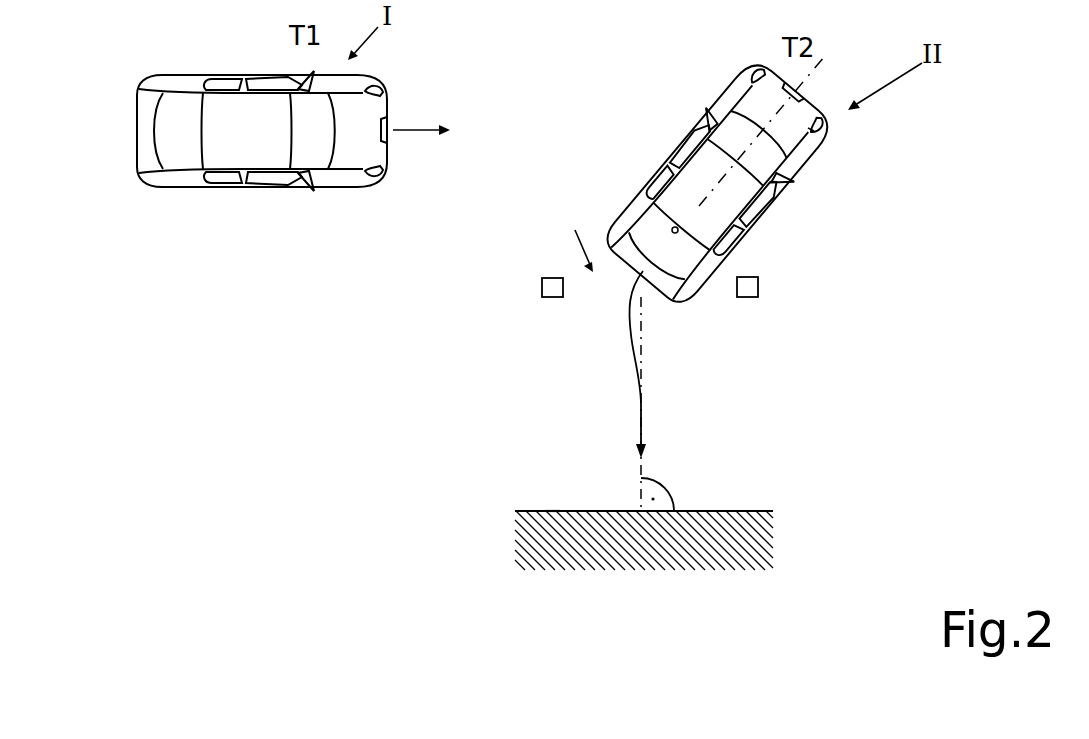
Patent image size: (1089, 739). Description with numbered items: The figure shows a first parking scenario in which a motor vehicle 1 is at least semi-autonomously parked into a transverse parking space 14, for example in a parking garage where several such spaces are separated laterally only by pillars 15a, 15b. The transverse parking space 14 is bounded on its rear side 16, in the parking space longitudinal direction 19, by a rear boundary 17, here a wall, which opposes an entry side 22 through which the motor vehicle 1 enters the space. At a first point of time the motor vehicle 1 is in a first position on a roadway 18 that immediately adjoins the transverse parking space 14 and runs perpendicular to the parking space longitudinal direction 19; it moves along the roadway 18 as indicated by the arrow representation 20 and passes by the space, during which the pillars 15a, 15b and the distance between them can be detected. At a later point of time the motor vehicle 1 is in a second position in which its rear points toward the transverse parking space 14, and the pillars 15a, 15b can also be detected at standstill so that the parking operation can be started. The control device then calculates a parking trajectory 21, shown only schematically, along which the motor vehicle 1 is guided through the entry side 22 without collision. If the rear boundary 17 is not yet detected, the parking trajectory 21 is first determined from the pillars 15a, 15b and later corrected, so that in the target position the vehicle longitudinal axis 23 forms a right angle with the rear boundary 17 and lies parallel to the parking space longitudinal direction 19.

The motor vehicle 1 is at (205, 76).
The arrow representation 20 is at (402, 130).
The roadway 18 is at (492, 141).
The vehicle longitudinal axis 23 is at (813, 130).
The entry side 22 is at (571, 237).
The pillar 15a is at (542, 286).
The pillar 15b is at (758, 288).
The parking trajectory 21 is at (632, 328).
The parking space longitudinal direction 19 is at (642, 345).
The transverse parking space 14 is at (707, 441).
The rear side 16 is at (737, 493).
The rear boundary 17 is at (552, 511).